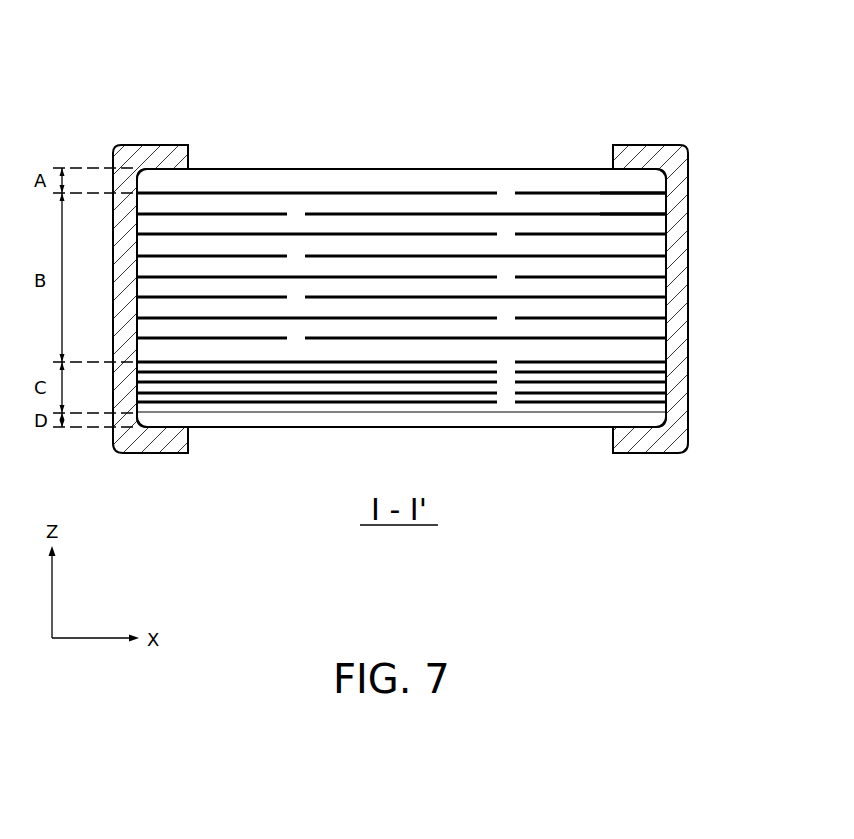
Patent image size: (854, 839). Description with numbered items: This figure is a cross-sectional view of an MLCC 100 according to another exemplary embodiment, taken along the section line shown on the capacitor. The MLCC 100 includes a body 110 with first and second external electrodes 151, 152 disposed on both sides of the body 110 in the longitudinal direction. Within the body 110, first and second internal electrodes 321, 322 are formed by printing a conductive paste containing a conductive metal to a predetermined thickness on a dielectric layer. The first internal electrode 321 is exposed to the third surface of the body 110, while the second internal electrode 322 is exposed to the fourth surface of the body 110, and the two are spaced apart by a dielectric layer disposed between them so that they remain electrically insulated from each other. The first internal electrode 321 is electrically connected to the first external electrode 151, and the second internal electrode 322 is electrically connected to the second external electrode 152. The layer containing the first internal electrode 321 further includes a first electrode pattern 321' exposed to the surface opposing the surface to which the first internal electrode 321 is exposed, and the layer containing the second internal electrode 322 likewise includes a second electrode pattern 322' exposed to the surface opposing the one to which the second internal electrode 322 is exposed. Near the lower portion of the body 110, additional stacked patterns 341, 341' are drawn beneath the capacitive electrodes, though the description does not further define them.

The MLCC 100 is at (280, 32).
The body 110 is at (452, 167).
The first external electrode 151 is at (170, 441).
The second external electrode 152 is at (634, 441).
The first internal electrode 321 is at (401, 149).
The first electrode pattern 321' is at (682, 182).
The second internal electrode 322 is at (676, 218).
The second electrode pattern 322' is at (401, 159).
The first dummy electrode 341 is at (317, 416).
The second dummy electrode 341' is at (590, 416).